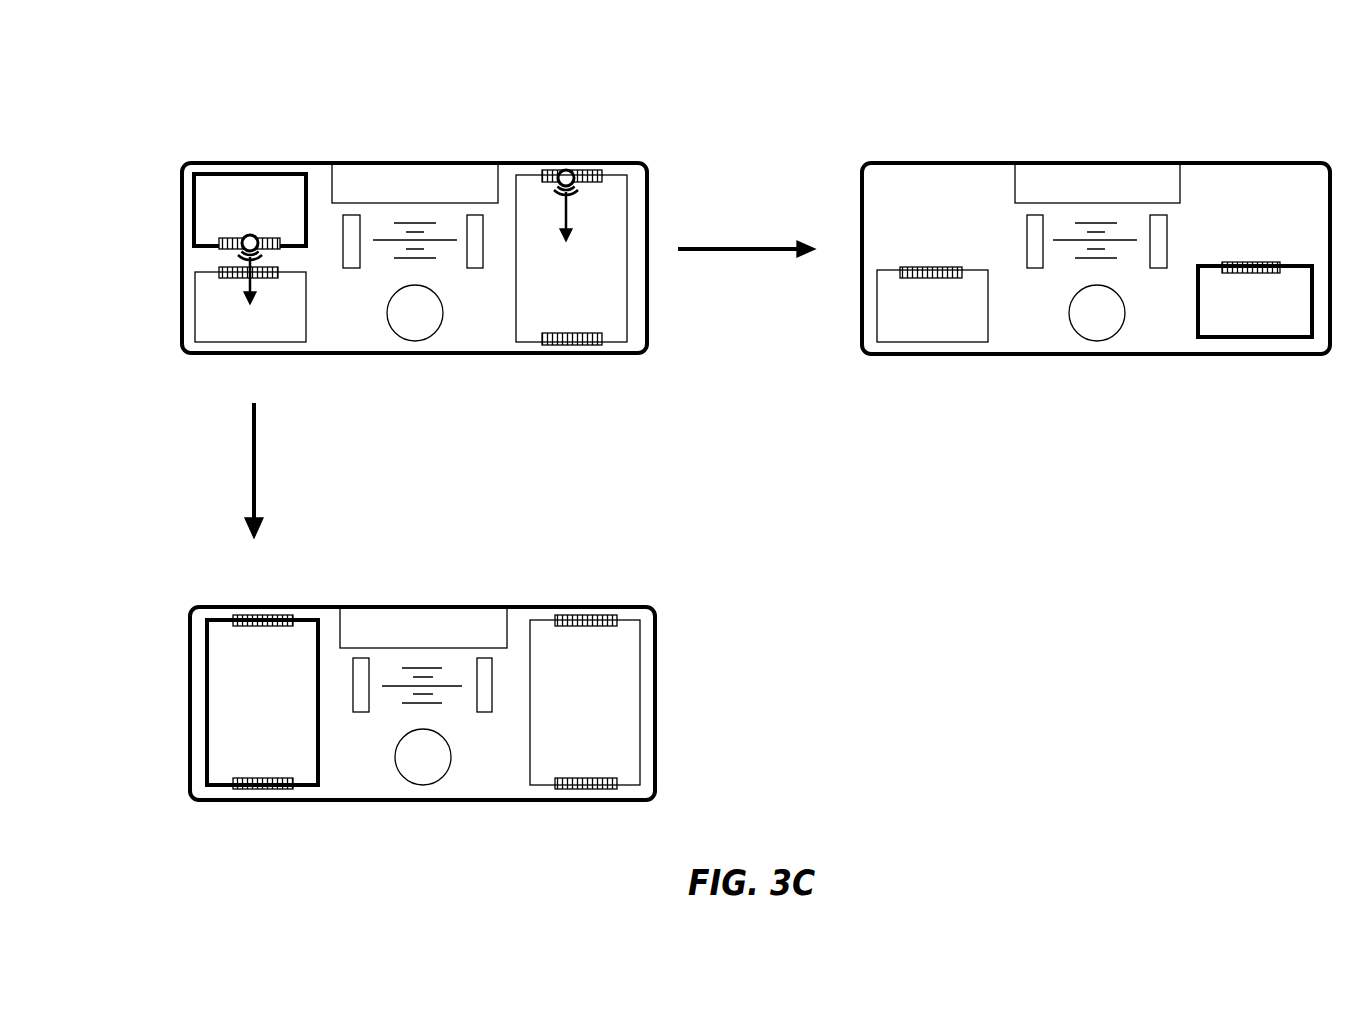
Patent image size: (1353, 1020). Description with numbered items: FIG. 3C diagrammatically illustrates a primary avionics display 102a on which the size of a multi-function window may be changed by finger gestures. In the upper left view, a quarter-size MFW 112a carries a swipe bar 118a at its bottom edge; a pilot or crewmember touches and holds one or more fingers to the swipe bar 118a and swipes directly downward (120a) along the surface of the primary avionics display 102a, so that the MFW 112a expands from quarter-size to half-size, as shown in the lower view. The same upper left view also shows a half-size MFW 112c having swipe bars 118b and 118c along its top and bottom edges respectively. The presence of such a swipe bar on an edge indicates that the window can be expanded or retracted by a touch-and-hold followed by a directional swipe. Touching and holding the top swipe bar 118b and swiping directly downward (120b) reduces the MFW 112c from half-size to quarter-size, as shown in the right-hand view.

The primary avionics display 102a is at (183, 84).
The MFW 112a is at (272, 198).
The half-size MFW 112c is at (628, 257).
The swipe bar 118a is at (223, 240).
The top swipe bar 118b is at (585, 170).
The swipe bar 118c is at (570, 345).
The directional swipe 120a is at (225, 263).
The directional swipe 120b is at (533, 220).